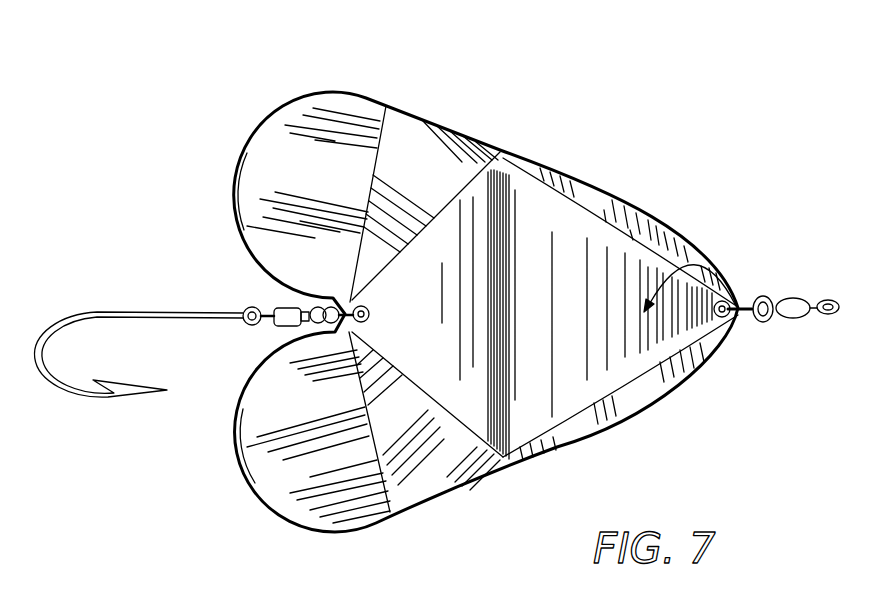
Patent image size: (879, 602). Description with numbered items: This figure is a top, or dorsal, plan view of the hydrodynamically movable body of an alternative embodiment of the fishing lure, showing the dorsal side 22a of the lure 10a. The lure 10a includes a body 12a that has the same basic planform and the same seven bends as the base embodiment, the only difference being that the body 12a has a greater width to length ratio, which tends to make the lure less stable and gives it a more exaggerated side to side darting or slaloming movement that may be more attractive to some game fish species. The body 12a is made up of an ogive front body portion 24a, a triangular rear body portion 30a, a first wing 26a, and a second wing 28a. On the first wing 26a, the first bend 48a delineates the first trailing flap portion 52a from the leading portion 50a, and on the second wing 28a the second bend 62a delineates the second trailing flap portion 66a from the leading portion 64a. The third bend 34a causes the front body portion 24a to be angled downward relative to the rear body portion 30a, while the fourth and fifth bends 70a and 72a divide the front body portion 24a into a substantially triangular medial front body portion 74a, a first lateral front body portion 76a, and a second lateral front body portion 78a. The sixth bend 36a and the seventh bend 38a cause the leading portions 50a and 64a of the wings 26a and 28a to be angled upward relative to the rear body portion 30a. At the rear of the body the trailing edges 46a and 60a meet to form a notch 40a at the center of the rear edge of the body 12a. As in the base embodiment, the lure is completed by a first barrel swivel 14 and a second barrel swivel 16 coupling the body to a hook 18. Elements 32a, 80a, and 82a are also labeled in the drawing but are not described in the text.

The fishing lure 10a is at (628, 75).
The body 12a is at (667, 203).
The first barrel swivel 14 is at (810, 313).
The second barrel swivel 16 is at (262, 330).
The hook 18 is at (117, 298).
The dorsal side 22a is at (498, 414).
The ogive front body portion 24a is at (723, 277).
The first wing 26a is at (404, 491).
The second wing 28a is at (396, 147).
The triangular rear body portion 30a is at (443, 265).
The blade eyelet 32a is at (742, 316).
The third bend 34a is at (507, 300).
The sixth bend 36a is at (423, 353).
The seventh bend 38a is at (404, 253).
The notch 40a is at (285, 297).
The trailing edge 46a is at (246, 480).
The first bend 48a is at (363, 428).
The leading portion 50a is at (437, 480).
The first trailing flap portion 52a is at (277, 482).
The trailing edge 60a is at (235, 160).
The second bend 62a is at (307, 227).
The leading portion 64a is at (500, 128).
The second trailing flap portion 66a is at (318, 112).
The fourth bend 70a is at (703, 380).
The fifth bend 72a is at (606, 210).
The medial front body portion 74a is at (567, 383).
The first lateral front body portion 76a is at (657, 392).
The second lateral front body portion 78a is at (683, 250).
The clasp 80a is at (747, 302).
The lower lobe inner surface 82a is at (327, 383).